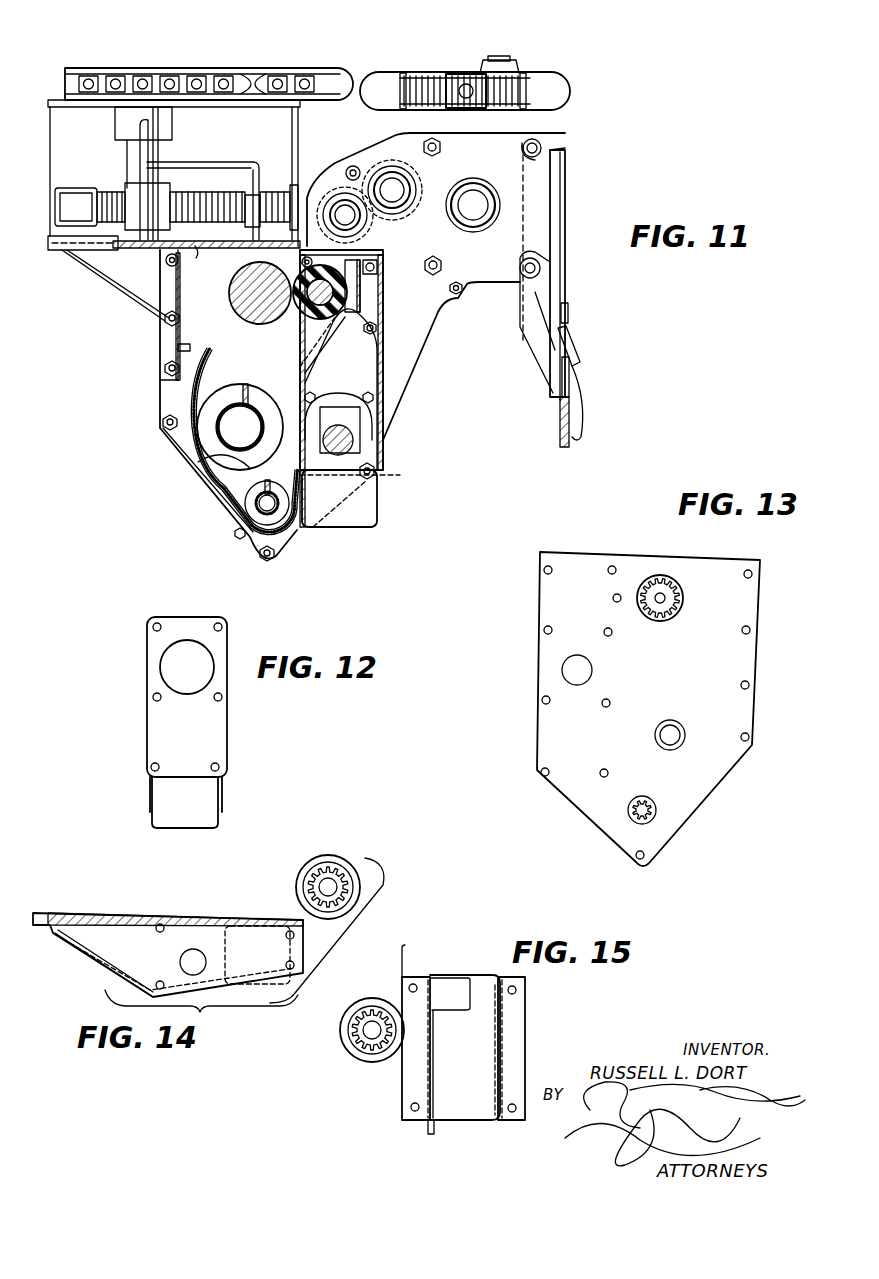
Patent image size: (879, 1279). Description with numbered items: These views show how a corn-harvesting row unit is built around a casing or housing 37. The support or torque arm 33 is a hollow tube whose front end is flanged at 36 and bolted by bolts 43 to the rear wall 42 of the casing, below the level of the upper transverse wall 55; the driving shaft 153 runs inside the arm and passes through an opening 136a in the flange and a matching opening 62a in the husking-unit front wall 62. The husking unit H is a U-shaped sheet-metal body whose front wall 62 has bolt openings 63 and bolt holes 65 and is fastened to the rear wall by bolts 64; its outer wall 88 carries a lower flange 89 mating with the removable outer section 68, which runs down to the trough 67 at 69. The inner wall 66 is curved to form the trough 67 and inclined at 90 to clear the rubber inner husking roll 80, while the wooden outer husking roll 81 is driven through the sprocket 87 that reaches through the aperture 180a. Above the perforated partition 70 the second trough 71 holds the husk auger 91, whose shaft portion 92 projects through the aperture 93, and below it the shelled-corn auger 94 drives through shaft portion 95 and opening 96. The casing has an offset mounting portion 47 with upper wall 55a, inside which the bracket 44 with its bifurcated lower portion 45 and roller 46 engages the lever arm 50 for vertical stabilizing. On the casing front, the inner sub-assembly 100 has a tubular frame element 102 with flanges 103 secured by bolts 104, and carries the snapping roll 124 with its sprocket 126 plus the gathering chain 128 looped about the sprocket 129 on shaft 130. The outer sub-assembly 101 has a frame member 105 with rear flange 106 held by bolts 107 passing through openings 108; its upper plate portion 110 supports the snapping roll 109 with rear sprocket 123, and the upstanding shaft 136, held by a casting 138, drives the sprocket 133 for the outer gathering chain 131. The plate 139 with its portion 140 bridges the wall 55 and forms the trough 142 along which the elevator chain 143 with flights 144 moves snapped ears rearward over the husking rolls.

In FIG. 11, the outer gathering chain 131 is at (211, 68).
In FIG. 11, the gathering chain sprocket 133 is at (147, 76).
In FIG. 11, the shaft 130 is at (481, 57).
In FIG. 11, the sprocket 129 is at (496, 77).
In FIG. 11, the endless gathering chain 128 is at (530, 80).
In FIG. 11, the upstanding shaft 136 is at (131, 156).
In FIG. 11, the casting 138 is at (165, 121).
In FIG. 11, the trough 142 is at (281, 173).
In FIG. 11, the endless elevator chain 143 is at (263, 172).
In FIG. 11, the paddles or flights 144 is at (90, 190).
In FIG. 11, the feed path F is at (92, 183).
In FIG. 11, the snapping roll 109 is at (342, 187).
In FIG. 14, the snapping roll 109 is at (326, 860).
In FIG. 11, the snapping roll 124 is at (386, 160).
In FIG. 14, the snapping roll 124 is at (341, 1030).
In FIG. 11, the bolts 104 is at (430, 139).
In FIG. 11, the upper wall 55a is at (535, 145).
In FIG. 11, the offset mounting portion 47 is at (545, 147).
In FIG. 11, the bolts 107 is at (308, 262).
In FIG. 11, the plate or section 139 is at (163, 253).
In FIG. 11, the frame or supporting member 105 is at (90, 277).
In FIG. 14, the frame or supporting member 105 is at (93, 962).
In FIG. 11, the rear flange or face 106 is at (113, 281).
In FIG. 14, the rear flange or face 106 is at (118, 925).
In FIG. 11, the longitudinally extending wall 88 is at (176, 287).
In FIG. 11, the upper transverse wall 55 is at (206, 247).
In FIG. 11, the outer husking roll 81 is at (245, 300).
In FIG. 11, the inner husking roll 80 is at (338, 295).
In FIG. 11, the husking unit H is at (195, 333).
In FIG. 13, the husking unit H is at (568, 810).
In FIG. 11, the lower flange 89 is at (173, 352).
In FIG. 11, the bolts 64 is at (164, 422).
In FIG. 11, the husk auger 91 is at (232, 420).
In FIG. 11, the front wall 62 is at (180, 448).
In FIG. 13, the front wall 62 is at (548, 727).
In FIG. 11, the second trough 71 is at (210, 466).
In FIG. 11, the longitudinal partition 70 is at (207, 470).
In FIG. 11, the outer wall 68 is at (222, 493).
In FIG. 11, the junction of outer wall and trough 69 is at (238, 535).
In FIG. 11, the shelled-corn auger 94 is at (265, 522).
In FIG. 11, the trough 67 is at (300, 521).
In FIG. 11, the bolts 43 is at (377, 329).
In FIG. 11, the casing or housing 37 is at (444, 327).
In FIG. 11, the flange 36 is at (377, 347).
In FIG. 12, the flange 36 is at (147, 737).
In FIG. 11, the rear wall 42 is at (402, 376).
In FIG. 11, the shaft 153 is at (350, 423).
In FIG. 11, the support or torque arm 33 is at (374, 497).
In FIG. 12, the support or torque arm 33 is at (144, 781).
In FIG. 11, the bracket 44 is at (568, 195).
In FIG. 11, the bifurcated lower portion 45 is at (580, 355).
In FIG. 11, the roller 46 is at (569, 385).
In FIG. 11, the lever arm 50 is at (564, 448).
In FIG. 11, the inclined portion of inner wall 90 is at (325, 352).
In FIG. 11, the inner longitudinal wall or sheet 66 is at (306, 388).
In FIG. 12, the opening 136a is at (161, 672).
In FIG. 13, the sprocket 87 is at (660, 575).
In FIG. 13, the aperture 180a is at (686, 581).
In FIG. 13, the openings 108 is at (614, 597).
In FIG. 13, the bolt openings 63 is at (546, 575).
In FIG. 13, the bolt holes 65 is at (545, 697).
In FIG. 13, the opening 62a is at (586, 666).
In FIG. 13, the aperture 93 is at (678, 724).
In FIG. 13, the coaxial shaft portion 92 is at (682, 737).
In FIG. 13, the opening 96 is at (651, 802).
In FIG. 13, the shaft portion 95 is at (636, 820).
In FIG. 14, the upper horizontal plate portion 110 is at (90, 913).
In FIG. 14, the outer sub-assembly 101 is at (193, 911).
In FIG. 14, the portion 140 is at (262, 920).
In FIG. 14, the sprocket 123 is at (338, 870).
In FIG. 14, the sprocket 126 is at (375, 1012).
In FIG. 15, the inner sub-assembly 100 is at (436, 950).
In FIG. 15, the supporting member or frame element 102 is at (472, 975).
In FIG. 15, the flanges 103 is at (414, 1115).